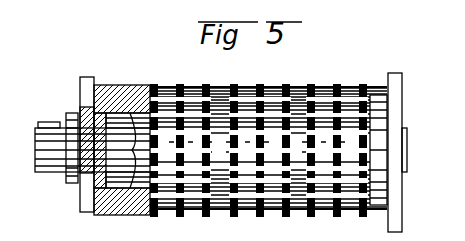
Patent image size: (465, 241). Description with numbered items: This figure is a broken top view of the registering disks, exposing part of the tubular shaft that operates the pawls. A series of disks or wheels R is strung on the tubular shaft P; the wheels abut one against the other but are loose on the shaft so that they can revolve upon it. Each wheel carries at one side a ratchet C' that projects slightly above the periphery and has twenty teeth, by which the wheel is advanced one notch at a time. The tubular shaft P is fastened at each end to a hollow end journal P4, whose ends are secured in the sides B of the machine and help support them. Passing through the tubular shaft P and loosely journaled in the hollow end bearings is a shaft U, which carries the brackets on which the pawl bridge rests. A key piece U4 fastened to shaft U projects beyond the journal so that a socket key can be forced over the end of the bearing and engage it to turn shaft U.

The sides B is at (79, 82).
The disks or wheels R is at (99, 86).
The ratchet C' is at (258, 150).
The hollow end journals P4 is at (116, 90).
The tubular shaft P is at (143, 87).
The shaft U is at (67, 179).
The key piece U4 is at (43, 122).